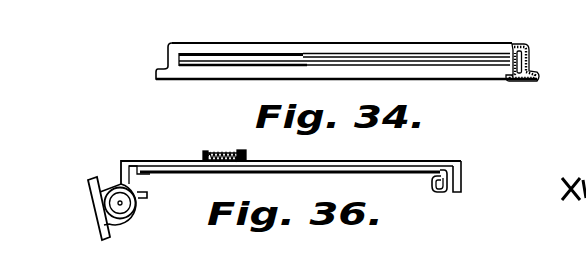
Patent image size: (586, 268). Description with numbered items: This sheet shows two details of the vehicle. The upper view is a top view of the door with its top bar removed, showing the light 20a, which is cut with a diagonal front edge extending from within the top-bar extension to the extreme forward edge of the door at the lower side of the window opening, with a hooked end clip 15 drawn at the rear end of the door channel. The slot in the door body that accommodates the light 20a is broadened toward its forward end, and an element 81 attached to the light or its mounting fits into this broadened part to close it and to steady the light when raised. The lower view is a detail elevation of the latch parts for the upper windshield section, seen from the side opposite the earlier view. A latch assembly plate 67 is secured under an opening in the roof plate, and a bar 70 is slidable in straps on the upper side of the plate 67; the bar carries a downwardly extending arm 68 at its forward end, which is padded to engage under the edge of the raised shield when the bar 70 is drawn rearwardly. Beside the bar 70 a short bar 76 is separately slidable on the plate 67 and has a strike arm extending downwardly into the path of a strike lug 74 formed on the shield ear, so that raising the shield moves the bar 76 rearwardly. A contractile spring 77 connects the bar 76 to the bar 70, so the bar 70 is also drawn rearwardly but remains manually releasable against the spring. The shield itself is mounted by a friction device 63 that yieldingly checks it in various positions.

In FIG. 34, the element 81 is at (232, 54).
In FIG. 34, the light 20a is at (408, 62).
In FIG. 34, the hooked end clip 15 is at (525, 62).
In FIG. 36, the short bar 76 is at (154, 163).
In FIG. 36, the contractile spring 77 is at (224, 153).
In FIG. 36, the latch assembly plate 67 is at (332, 173).
In FIG. 36, the bar 70 is at (392, 167).
In FIG. 36, the arm 68 is at (465, 189).
In FIG. 36, the friction device 63 is at (111, 183).
In FIG. 36, the strike lug 74 is at (146, 196).